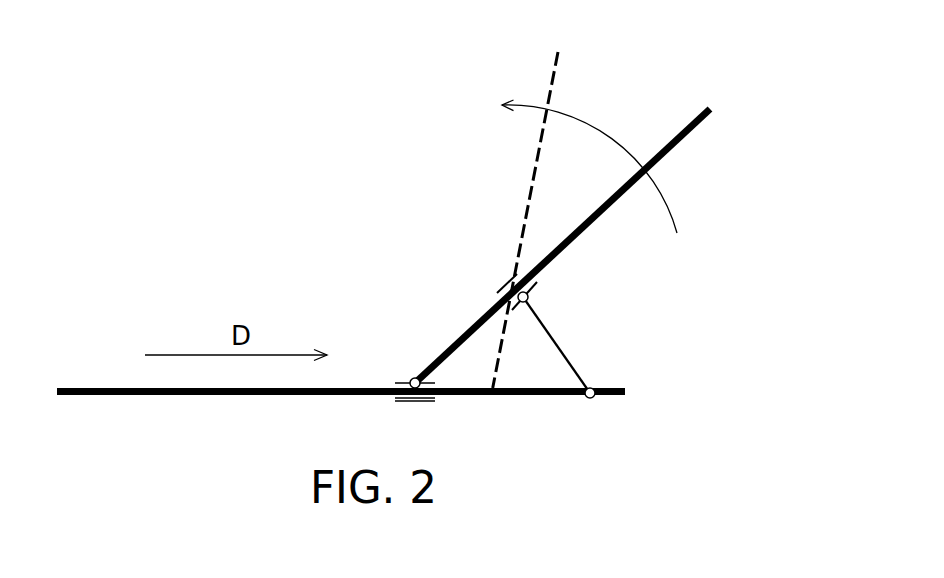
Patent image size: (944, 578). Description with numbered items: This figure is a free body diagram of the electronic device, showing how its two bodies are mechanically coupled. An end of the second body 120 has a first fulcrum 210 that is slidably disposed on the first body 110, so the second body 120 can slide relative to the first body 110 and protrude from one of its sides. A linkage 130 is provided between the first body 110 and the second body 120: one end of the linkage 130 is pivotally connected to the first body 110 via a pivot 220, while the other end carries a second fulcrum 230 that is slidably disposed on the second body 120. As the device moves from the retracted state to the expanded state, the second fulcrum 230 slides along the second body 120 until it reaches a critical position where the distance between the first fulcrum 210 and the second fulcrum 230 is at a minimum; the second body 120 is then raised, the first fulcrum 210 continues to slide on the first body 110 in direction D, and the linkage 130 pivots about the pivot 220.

The first body 110 is at (105, 387).
The second body 120 is at (693, 133).
The linkage 130 is at (560, 340).
The first fulcrum 210 is at (410, 378).
The pivot 220 is at (592, 398).
The second fulcrum 230 is at (529, 295).